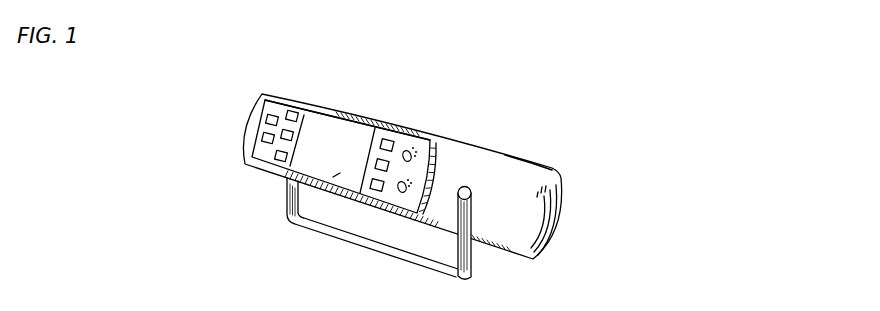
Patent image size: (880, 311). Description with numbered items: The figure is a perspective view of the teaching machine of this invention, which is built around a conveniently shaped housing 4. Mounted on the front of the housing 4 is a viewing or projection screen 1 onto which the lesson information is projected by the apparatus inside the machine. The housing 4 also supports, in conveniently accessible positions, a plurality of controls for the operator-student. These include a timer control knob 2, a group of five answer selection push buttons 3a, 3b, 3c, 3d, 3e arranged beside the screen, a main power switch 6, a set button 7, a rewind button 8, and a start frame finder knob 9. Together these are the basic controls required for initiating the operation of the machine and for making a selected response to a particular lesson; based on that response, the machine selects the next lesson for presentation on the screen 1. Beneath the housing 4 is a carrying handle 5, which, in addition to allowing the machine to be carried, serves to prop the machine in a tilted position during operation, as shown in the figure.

The viewing or projection screen 1 is at (324, 132).
The timer control knob 2 is at (418, 216).
The answer selection push button 3a is at (288, 105).
The answer selection push button 3b is at (282, 130).
The answer selection push button 3c is at (272, 158).
The answer selection push button 3d is at (267, 112).
The answer selection push button 3e is at (262, 139).
The housing 4 is at (562, 177).
The carrying handle 5 is at (285, 208).
The main power switch 6 is at (391, 160).
The set button 7 is at (413, 150).
The rewind button 8 is at (381, 192).
The start frame finder knob 9 is at (430, 141).